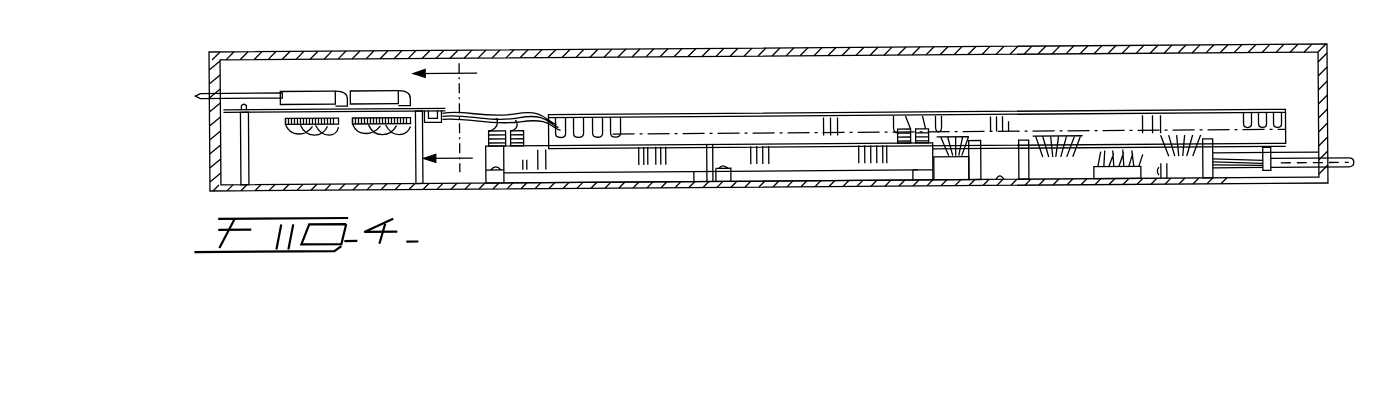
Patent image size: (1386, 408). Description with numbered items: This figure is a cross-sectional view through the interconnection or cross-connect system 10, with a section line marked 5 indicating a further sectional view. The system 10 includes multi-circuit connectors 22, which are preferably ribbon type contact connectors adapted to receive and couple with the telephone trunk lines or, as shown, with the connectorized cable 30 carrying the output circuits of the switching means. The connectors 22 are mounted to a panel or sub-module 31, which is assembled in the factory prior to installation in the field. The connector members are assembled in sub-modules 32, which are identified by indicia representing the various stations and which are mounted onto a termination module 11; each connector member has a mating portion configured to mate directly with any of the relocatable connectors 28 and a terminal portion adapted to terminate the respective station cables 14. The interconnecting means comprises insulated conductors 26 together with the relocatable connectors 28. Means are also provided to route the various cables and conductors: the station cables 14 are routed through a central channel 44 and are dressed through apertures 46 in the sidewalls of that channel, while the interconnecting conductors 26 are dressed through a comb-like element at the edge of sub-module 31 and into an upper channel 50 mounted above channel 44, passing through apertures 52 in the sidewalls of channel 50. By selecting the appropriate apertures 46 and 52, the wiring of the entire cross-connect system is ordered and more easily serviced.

The cross-connect system 10 is at (1028, 42).
The termination module 11 is at (843, 191).
The station cables 14 is at (1283, 168).
The multi-circuit connectors 22 is at (323, 113).
The insulated conductors 26 is at (380, 136).
The relocatable connectors 28 is at (520, 148).
The connectorized cable 30 is at (252, 93).
The sub-module 31 is at (258, 118).
The sub-modules 32 is at (615, 155).
The central channel 44 is at (1162, 178).
The apertures 46 is at (1080, 153).
The upper channel 50 is at (797, 130).
The apertures 52 is at (607, 131).
The section line 5- 5 is at (454, 122).